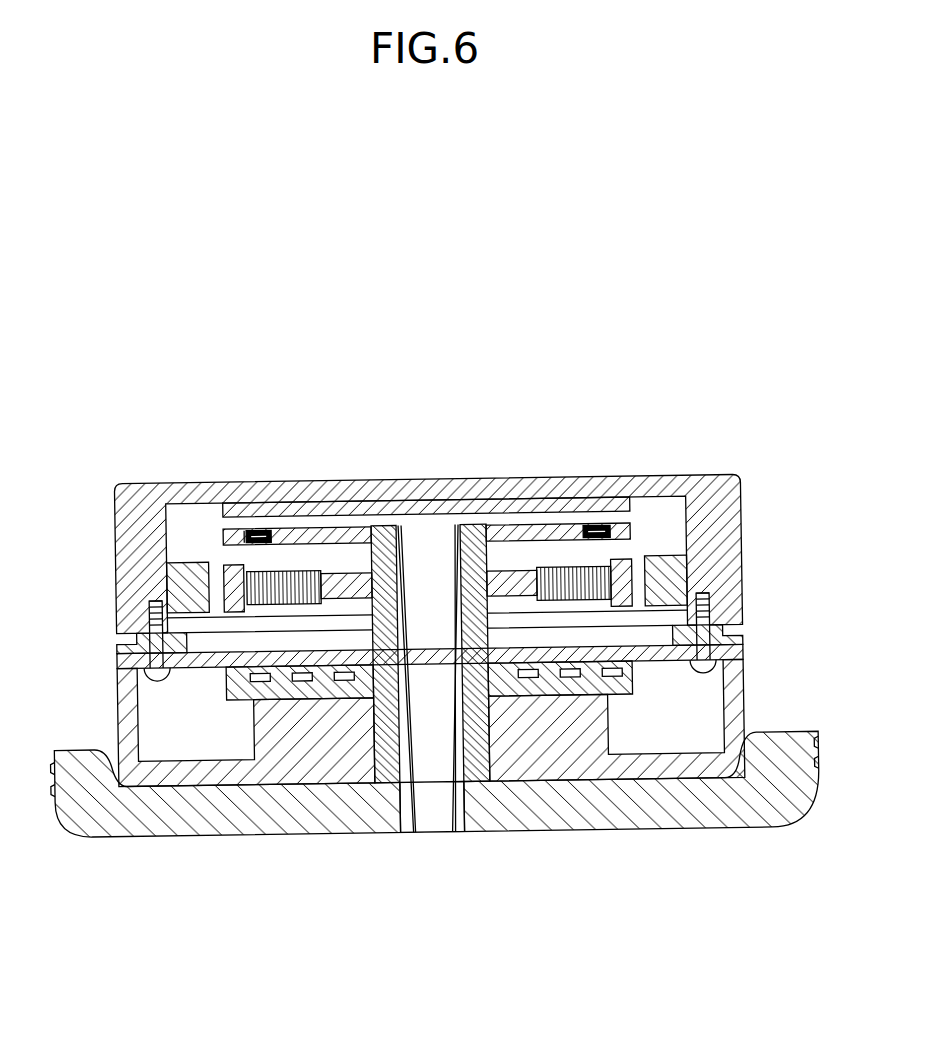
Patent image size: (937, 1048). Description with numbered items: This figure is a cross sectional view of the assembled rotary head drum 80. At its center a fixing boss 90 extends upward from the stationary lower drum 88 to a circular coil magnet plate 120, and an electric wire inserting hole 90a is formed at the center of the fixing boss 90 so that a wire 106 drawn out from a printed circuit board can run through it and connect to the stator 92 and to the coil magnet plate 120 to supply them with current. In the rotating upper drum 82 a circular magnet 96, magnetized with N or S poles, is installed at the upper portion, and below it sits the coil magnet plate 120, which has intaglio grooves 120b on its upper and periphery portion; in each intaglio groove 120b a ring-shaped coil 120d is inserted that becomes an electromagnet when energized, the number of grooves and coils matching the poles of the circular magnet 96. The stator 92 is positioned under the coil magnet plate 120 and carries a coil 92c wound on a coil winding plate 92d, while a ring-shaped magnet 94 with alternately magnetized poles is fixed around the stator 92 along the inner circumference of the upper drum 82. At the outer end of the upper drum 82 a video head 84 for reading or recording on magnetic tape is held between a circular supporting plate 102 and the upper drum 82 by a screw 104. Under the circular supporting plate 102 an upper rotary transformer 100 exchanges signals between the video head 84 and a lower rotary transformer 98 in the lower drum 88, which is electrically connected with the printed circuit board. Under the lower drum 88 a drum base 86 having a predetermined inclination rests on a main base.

The head drum 80 is at (443, 342).
The upper drum 82 is at (712, 478).
The video head 84 is at (118, 650).
The drum base 86 is at (184, 822).
The lower drum 88 is at (269, 768).
The fixing boss 90 is at (478, 770).
The electric wire inserting hole 90a is at (465, 830).
The stator 92 is at (505, 556).
The coil 92c is at (553, 567).
The coil winding plate 92d is at (622, 560).
The ring-shaped magnet 94 is at (182, 588).
The circular magnet 96 is at (421, 507).
The lower rotary transformer 98 is at (322, 702).
The upper rotary transformer 100 is at (236, 672).
The circular supporting plate 102 is at (118, 658).
The screw 104 is at (720, 658).
The wire 106 is at (401, 830).
The circular coil magnet plate 120 is at (333, 537).
The intaglio groove 120b is at (270, 530).
The ring-shaped coil 120d is at (258, 531).